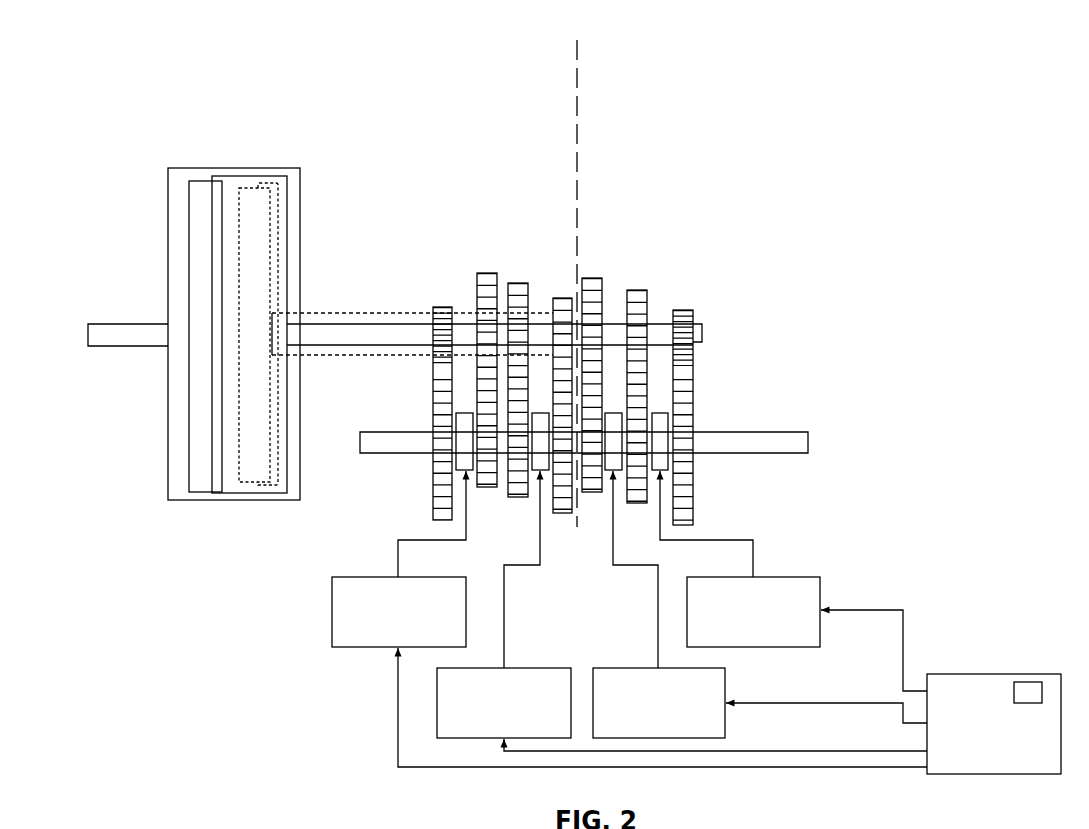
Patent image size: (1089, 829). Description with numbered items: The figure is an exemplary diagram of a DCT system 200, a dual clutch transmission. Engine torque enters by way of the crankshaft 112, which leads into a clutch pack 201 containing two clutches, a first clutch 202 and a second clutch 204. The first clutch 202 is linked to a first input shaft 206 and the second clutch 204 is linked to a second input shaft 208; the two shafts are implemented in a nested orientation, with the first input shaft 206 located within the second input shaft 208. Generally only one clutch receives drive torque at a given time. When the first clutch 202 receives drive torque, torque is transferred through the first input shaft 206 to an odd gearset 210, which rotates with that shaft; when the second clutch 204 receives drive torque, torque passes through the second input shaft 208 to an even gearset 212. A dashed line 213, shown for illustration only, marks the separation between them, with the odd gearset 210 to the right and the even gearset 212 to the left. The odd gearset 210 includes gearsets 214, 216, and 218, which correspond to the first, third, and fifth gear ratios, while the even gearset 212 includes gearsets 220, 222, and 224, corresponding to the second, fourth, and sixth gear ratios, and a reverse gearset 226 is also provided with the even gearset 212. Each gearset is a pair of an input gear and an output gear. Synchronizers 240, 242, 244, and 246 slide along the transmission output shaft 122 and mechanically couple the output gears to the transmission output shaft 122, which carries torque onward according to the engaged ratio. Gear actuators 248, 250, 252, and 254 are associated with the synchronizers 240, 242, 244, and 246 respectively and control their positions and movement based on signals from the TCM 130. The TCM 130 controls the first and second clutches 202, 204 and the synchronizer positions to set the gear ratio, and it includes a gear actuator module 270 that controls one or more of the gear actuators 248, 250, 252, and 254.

The DCT system 200 is at (125, 61).
The clutch pack 201 is at (294, 168).
The first clutch 202 is at (197, 176).
The second clutch 204 is at (250, 185).
The crankshaft 112 is at (125, 323).
The first input shaft 206 is at (372, 323).
The second input shaft 208 is at (401, 312).
The dashed line 213 is at (577, 48).
The odd gearset 210 is at (618, 129).
The even gearset 212 is at (537, 129).
The gearset 214 is at (683, 309).
The gearset 216 is at (637, 289).
The gearset 218 is at (592, 277).
The gearset 220 is at (563, 297).
The gearset 222 is at (518, 282).
The gearset 224 is at (487, 272).
The reverse gearset 226 is at (441, 305).
The transmission output shaft 122 is at (791, 432).
The synchronizer 240 is at (670, 422).
The synchronizer 242 is at (623, 424).
The synchronizer 244 is at (527, 426).
The synchronizer 246 is at (451, 425).
The gear actuator 248 is at (722, 577).
The gear actuator 250 is at (638, 668).
The gear actuator 252 is at (555, 668).
The gear actuator 254 is at (358, 577).
The TCM 130 is at (959, 674).
The gear actuator module 270 is at (1022, 682).